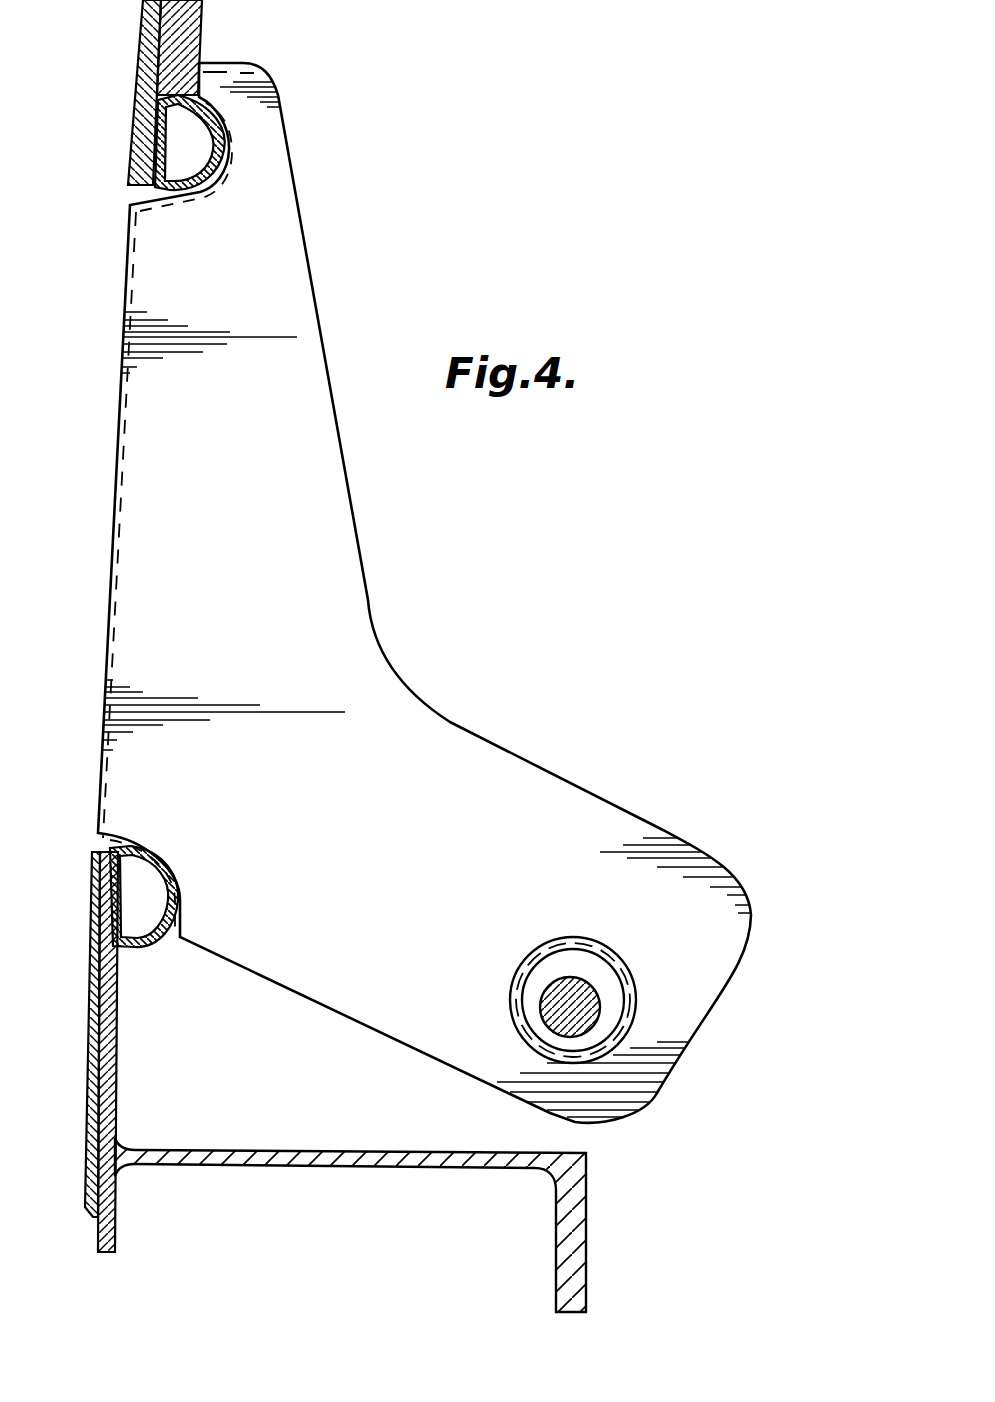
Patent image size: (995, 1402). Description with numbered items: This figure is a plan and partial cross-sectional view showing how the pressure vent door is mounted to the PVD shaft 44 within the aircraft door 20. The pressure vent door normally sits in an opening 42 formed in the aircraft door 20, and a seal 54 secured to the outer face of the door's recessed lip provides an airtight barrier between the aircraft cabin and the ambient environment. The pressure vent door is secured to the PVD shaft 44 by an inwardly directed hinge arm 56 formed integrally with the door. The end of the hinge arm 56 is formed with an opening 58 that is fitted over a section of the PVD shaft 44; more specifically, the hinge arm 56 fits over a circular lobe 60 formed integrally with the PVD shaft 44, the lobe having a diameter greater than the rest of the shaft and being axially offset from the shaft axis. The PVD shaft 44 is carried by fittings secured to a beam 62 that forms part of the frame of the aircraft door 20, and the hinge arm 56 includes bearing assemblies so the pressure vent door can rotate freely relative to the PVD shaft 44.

The aircraft door 20 is at (177, 32).
The opening 42 is at (93, 840).
The PVD shaft 44 is at (545, 1013).
The seal 54 is at (143, 947).
The hinge arm 56 is at (127, 413).
The opening 58 is at (627, 975).
The circular lobe 60 is at (610, 1012).
The beam 62 is at (327, 1170).